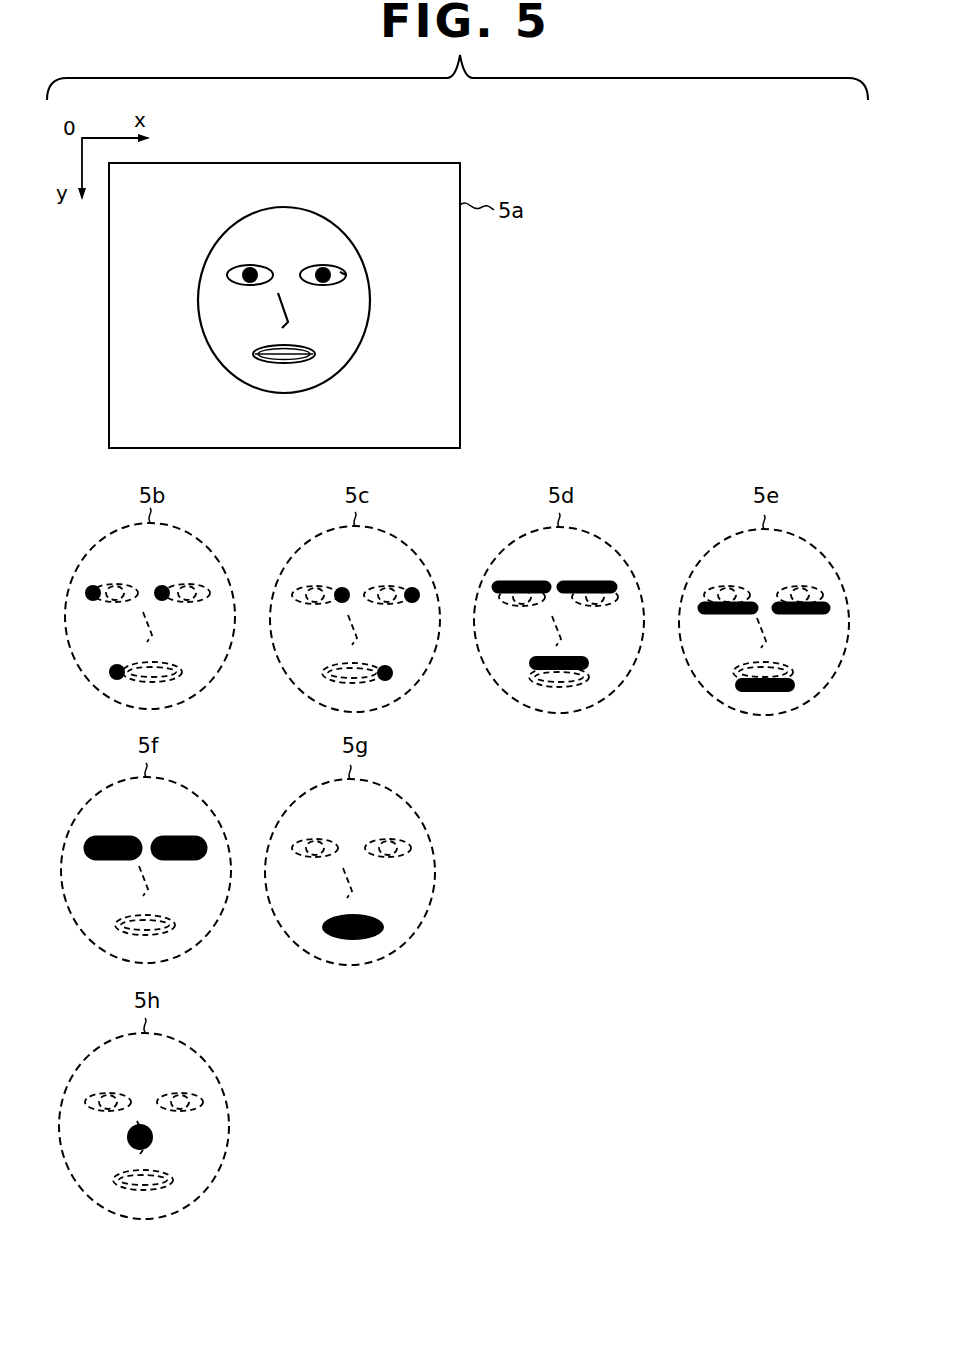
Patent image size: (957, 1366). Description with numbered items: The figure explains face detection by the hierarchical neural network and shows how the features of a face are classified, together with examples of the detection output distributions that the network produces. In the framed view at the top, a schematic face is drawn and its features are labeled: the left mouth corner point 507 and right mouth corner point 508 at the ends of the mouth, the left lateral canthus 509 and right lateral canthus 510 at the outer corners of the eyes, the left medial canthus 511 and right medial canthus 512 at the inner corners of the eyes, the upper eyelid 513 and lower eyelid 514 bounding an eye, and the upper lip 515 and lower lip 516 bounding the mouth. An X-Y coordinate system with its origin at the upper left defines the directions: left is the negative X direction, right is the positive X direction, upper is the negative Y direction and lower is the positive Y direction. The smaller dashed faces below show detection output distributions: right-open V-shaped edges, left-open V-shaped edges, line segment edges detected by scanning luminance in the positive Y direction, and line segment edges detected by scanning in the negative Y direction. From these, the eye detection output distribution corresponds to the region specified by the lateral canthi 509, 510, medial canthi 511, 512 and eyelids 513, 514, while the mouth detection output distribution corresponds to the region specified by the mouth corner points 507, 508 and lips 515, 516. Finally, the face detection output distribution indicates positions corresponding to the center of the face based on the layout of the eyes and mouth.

The left mouth corner point 507 is at (259, 356).
The right mouth corner point 508 is at (318, 356).
The left lateral canthus 509 is at (227, 274).
The right lateral canthus 510 is at (344, 274).
The left medial canthus 511 is at (272, 266).
The right medial canthus 512 is at (302, 268).
The upper eyelid 513 is at (323, 273).
The lower eyelid 514 is at (322, 284).
The upper lip 515 is at (277, 343).
The lower lip 516 is at (287, 363).